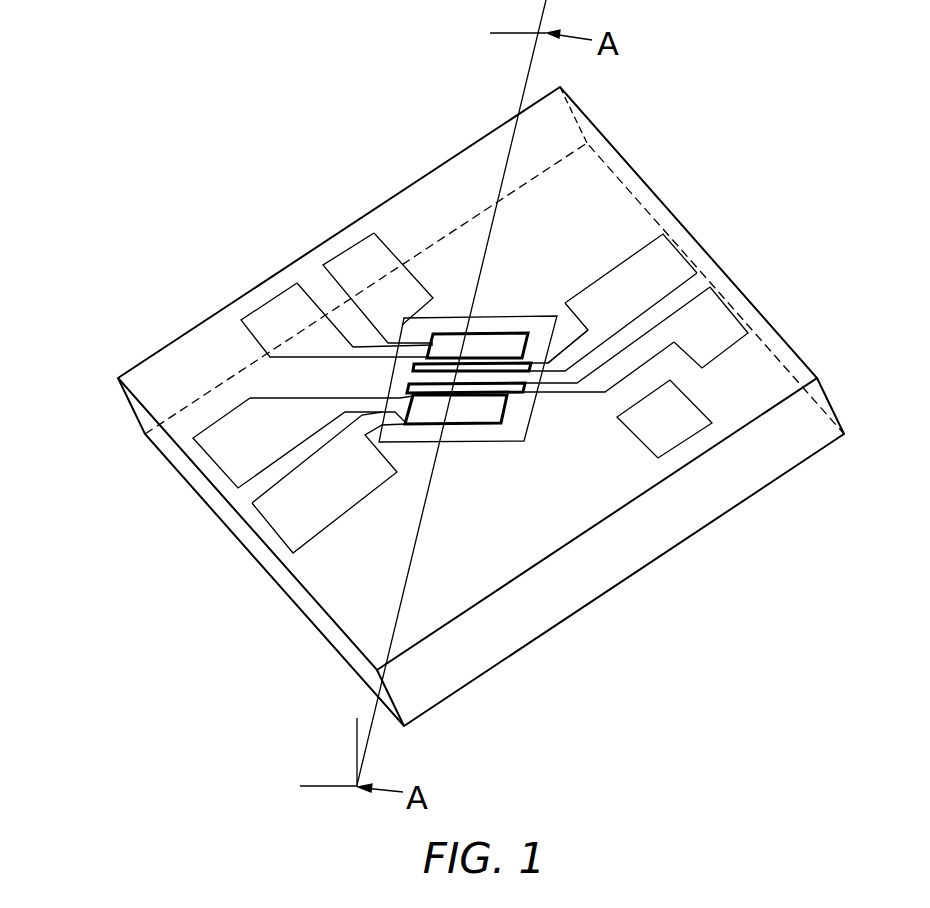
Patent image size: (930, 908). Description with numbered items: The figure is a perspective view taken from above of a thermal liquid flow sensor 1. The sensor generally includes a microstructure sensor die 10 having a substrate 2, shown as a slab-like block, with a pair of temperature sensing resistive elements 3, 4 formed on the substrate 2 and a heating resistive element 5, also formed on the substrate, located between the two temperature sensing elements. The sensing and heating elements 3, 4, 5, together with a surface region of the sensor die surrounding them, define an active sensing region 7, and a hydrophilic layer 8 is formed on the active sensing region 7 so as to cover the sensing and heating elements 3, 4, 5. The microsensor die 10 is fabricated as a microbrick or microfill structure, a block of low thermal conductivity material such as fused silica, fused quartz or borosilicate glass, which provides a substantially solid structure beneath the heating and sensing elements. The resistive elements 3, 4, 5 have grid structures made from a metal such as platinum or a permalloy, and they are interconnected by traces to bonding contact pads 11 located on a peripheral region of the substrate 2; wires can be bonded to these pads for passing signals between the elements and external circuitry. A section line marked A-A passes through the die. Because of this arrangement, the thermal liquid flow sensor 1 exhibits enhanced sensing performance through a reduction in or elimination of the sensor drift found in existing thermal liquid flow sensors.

The liquid flow sensor 1 is at (749, 85).
The substrate 2 is at (783, 453).
The temperature sensing resistive element 3 is at (463, 410).
The temperature sensing resistive element 4 is at (480, 345).
The heating resistive element 5 is at (412, 378).
The active sensing region 7 is at (518, 410).
The hydrophilic layer 8 is at (522, 443).
The microstructure sensor die 10 is at (702, 248).
The bonding contact pads 11 is at (710, 338).